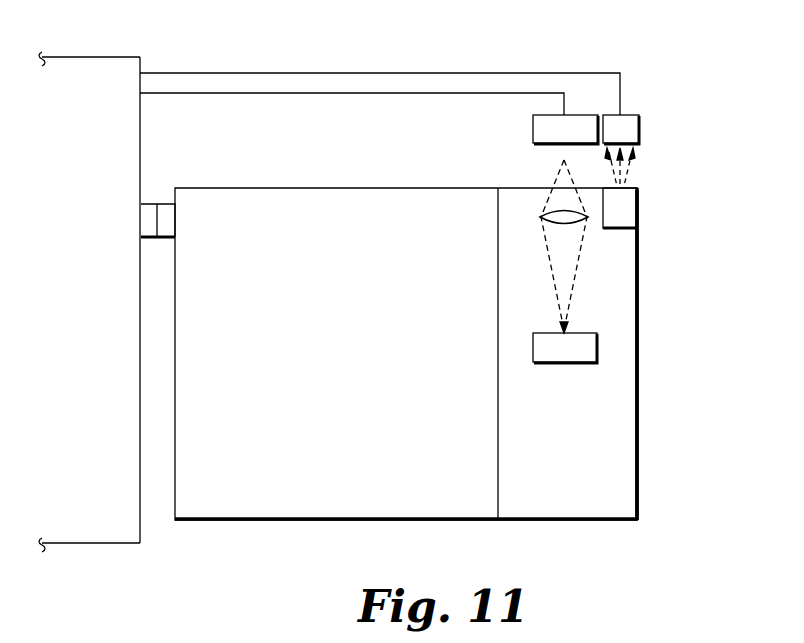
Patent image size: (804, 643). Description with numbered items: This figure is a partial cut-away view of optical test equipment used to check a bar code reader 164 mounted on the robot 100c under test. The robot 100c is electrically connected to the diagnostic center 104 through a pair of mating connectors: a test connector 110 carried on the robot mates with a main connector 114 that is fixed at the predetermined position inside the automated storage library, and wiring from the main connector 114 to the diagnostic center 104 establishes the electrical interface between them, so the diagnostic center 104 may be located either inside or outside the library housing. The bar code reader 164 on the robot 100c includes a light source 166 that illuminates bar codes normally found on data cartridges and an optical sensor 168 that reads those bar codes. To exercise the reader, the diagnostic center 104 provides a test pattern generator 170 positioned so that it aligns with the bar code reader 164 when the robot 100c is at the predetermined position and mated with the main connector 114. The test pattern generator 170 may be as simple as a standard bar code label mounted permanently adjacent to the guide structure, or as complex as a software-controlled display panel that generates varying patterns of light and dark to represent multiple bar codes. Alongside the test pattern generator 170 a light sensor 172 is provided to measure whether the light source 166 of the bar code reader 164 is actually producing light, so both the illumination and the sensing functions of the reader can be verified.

The robot under test 100c is at (335, 500).
The diagnostic center 104 is at (105, 80).
The test connector 110 is at (170, 222).
The main connector 114 is at (145, 222).
The bar code reader 164 is at (624, 443).
The light source 166 is at (625, 200).
The optical sensor 168 is at (557, 362).
The test pattern generator 170 is at (545, 126).
The light sensor 172 is at (628, 126).